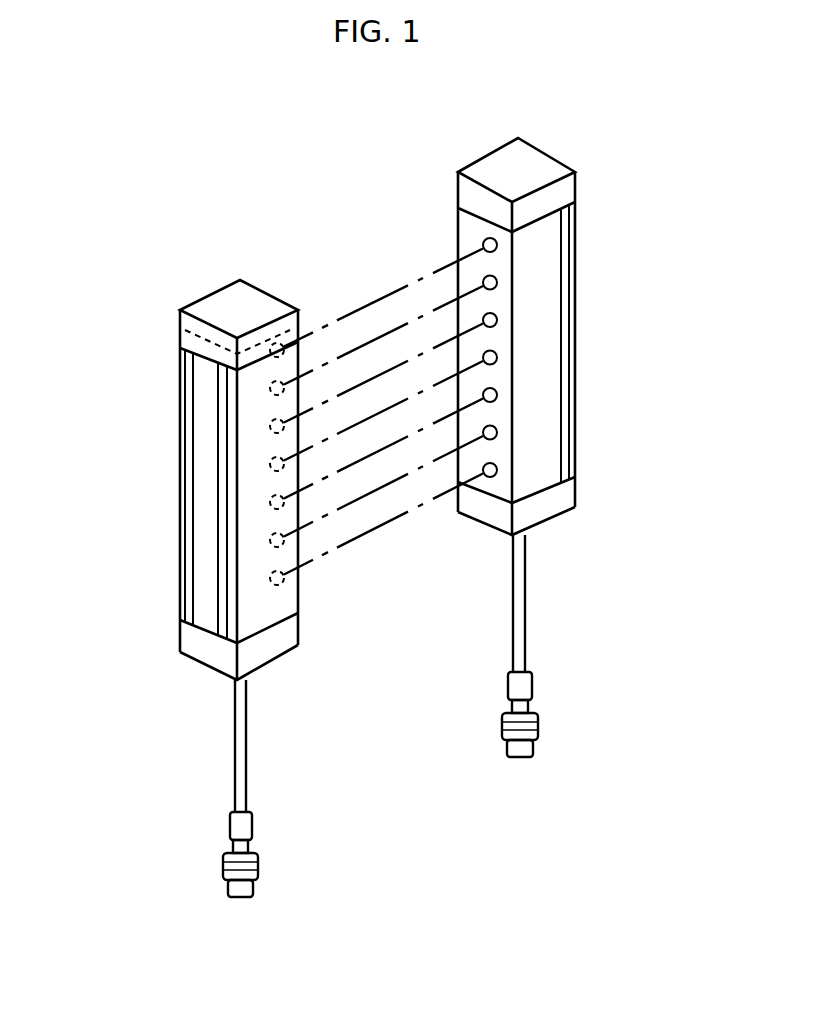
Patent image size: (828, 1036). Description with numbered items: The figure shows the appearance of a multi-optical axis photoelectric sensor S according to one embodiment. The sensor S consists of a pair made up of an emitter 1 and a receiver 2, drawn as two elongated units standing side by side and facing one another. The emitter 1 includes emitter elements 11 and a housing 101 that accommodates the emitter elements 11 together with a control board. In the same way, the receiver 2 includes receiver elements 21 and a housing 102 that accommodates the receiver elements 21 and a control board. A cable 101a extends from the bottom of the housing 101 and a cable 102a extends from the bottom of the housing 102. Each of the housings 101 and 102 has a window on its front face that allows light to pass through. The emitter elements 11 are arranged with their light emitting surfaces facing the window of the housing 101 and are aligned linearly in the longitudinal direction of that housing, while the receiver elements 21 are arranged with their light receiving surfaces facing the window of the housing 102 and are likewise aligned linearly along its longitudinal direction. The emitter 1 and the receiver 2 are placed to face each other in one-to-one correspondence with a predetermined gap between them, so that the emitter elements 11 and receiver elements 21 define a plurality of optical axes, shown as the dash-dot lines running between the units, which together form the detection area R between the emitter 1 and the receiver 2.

The multi-optical axis photoelectric sensor S is at (383, 125).
The emitter 1 is at (235, 287).
The receiver 2 is at (478, 163).
The emitter elements 11 is at (185, 330).
The receiver elements 21 is at (495, 249).
The housing 101 is at (180, 482).
The housing 102 is at (575, 335).
The cable 101a is at (232, 762).
The cable 102a is at (527, 603).
The detection area R is at (388, 540).